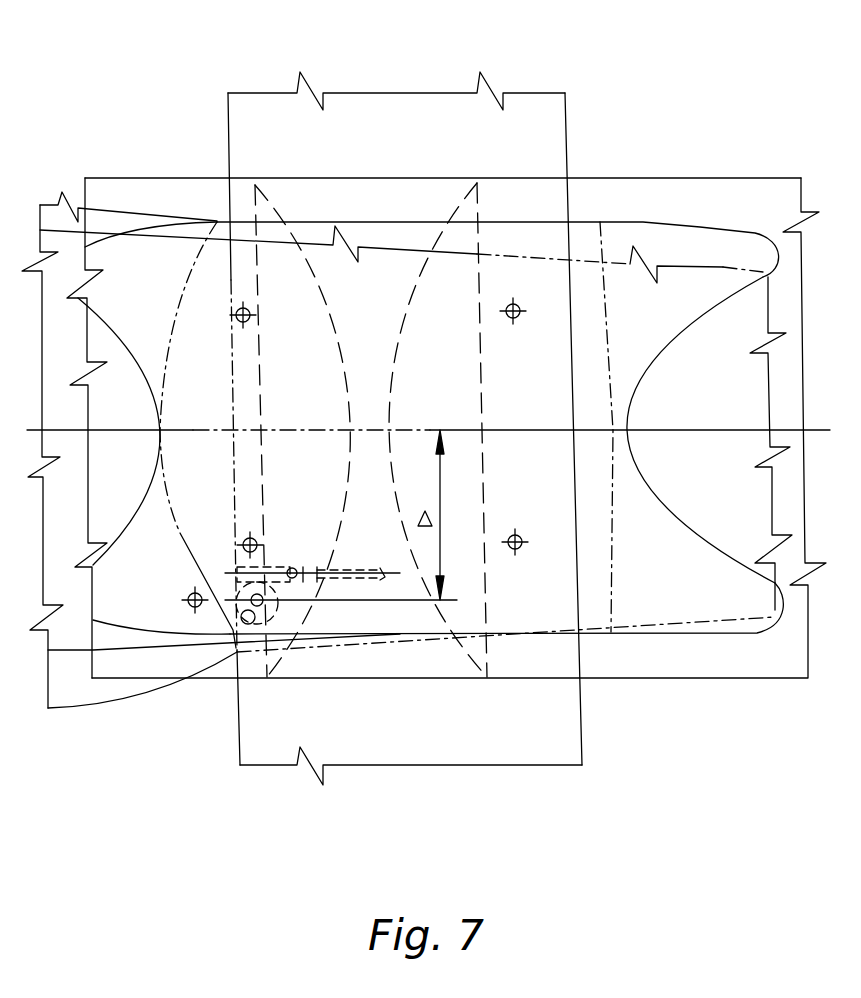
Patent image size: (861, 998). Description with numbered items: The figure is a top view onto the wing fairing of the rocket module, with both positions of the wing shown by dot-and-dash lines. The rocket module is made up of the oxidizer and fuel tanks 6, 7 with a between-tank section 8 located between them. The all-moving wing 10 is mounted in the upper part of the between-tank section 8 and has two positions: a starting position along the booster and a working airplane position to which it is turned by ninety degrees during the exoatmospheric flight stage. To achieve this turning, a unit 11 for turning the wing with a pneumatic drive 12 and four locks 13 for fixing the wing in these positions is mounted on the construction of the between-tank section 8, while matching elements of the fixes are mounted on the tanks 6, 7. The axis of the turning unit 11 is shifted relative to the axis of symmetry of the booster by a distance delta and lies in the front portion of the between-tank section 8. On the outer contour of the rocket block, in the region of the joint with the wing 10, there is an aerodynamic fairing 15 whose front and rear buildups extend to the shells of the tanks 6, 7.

The oxidizer tank 6 is at (112, 187).
The fuel tank 7 is at (647, 193).
The between-tank section 8 is at (375, 200).
The all-moving wing 10 is at (273, 753).
The unit for turning the wing 11 is at (248, 617).
The pneumatic drive 12 is at (293, 578).
The locks for fixing the wing 13 is at (243, 308).
The aerodynamic fairing 15 is at (657, 633).